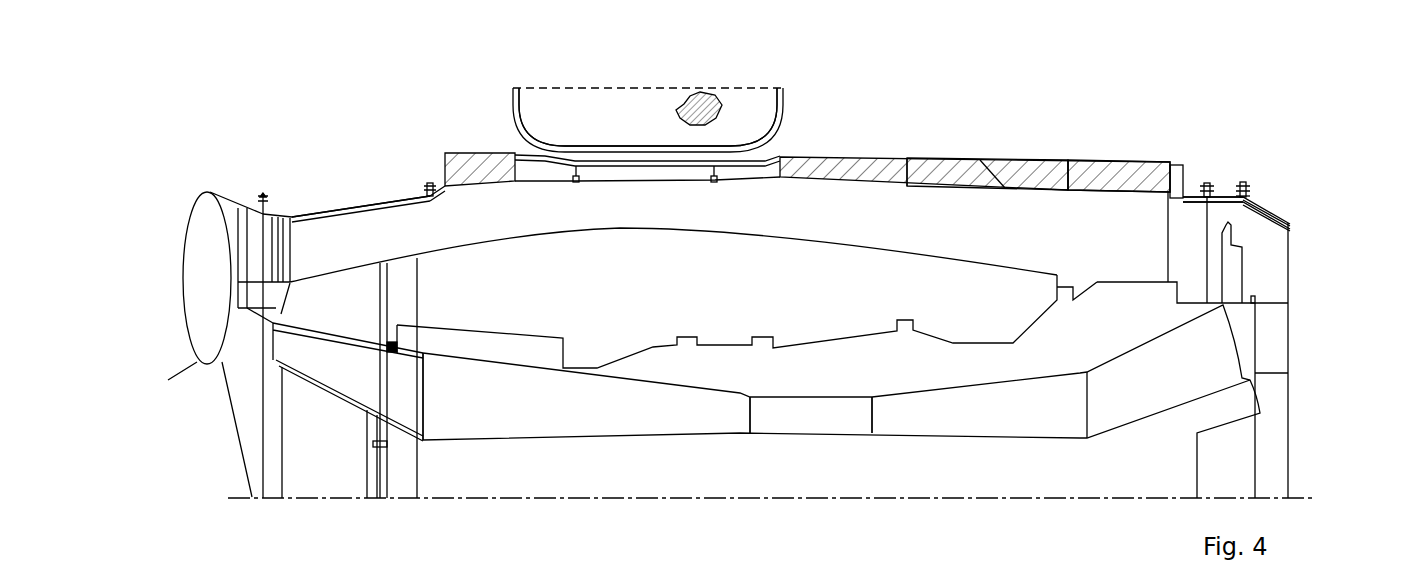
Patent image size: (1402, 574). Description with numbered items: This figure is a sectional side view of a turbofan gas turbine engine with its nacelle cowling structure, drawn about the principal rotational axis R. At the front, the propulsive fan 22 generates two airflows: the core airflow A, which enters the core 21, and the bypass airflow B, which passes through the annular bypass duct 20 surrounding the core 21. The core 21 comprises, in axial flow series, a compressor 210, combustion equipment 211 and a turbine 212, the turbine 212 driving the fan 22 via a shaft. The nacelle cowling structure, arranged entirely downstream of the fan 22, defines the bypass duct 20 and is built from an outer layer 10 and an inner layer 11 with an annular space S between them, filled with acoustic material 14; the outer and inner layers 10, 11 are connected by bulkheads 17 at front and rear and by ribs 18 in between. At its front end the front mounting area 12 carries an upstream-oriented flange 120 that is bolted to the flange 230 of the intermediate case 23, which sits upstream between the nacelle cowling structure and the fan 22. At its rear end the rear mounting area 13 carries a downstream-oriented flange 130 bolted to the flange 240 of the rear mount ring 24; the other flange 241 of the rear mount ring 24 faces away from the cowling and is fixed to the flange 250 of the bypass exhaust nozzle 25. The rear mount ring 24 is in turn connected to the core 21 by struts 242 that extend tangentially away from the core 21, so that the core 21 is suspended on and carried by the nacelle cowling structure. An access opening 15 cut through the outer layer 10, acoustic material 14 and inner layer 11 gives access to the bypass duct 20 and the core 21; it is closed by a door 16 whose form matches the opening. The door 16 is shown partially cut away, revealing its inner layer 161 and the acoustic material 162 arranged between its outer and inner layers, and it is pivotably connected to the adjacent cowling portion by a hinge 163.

The outer layer 10 is at (913, 170).
The inner layer 11 is at (963, 175).
The front mounting area 12 is at (388, 132).
The rear mounting area 13 is at (1219, 118).
The acoustic material 14 is at (1110, 170).
The access opening 15 is at (780, 155).
The door 16 is at (508, 96).
The bulkhead 17 is at (466, 176).
The rib 18 is at (900, 175).
The bypass duct 20 is at (887, 232).
The core 21 is at (720, 482).
The fan 22 is at (204, 222).
The intermediate case 23 is at (305, 208).
The rear mount ring 24 is at (1224, 196).
The bypass exhaust nozzle 25 is at (1250, 204).
The flange 120 is at (430, 181).
The flange 130 is at (1205, 182).
The inner layer 161 is at (752, 106).
The acoustic material 162 is at (705, 108).
The hinge 163 is at (578, 176).
The compressor 210 is at (547, 413).
The combustion equipment 211 is at (800, 418).
The turbine 212 is at (980, 418).
The flange 230 is at (423, 193).
The flange 240 is at (1212, 195).
The flange 241 is at (1235, 193).
The strut 242 is at (1233, 275).
The flange 250 is at (1250, 190).
The core airflow A is at (262, 337).
The bypass airflow B is at (262, 257).
The principal rotational axis R is at (898, 500).
The space S is at (1008, 170).